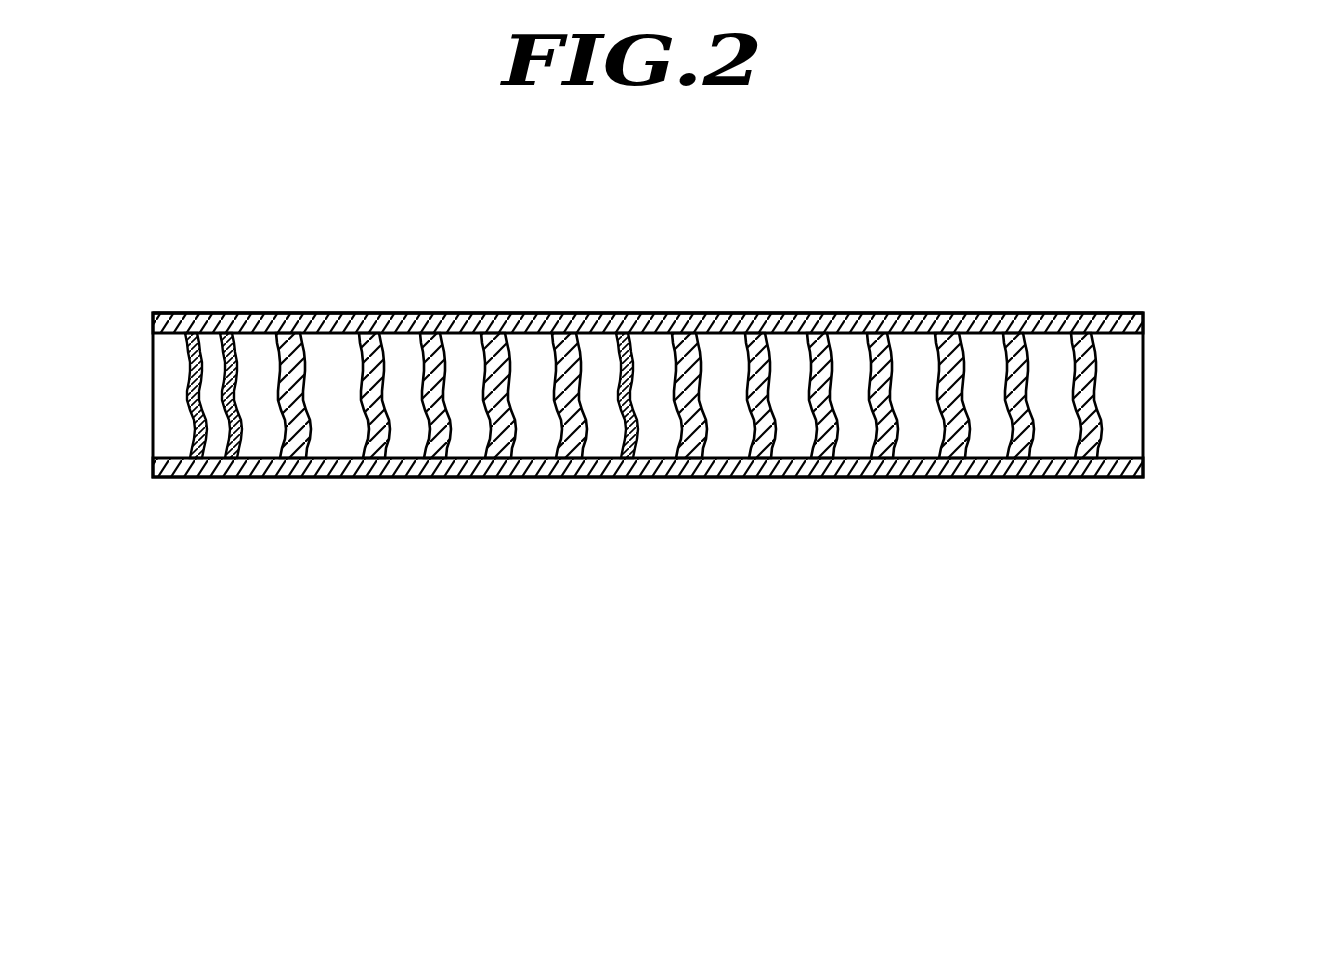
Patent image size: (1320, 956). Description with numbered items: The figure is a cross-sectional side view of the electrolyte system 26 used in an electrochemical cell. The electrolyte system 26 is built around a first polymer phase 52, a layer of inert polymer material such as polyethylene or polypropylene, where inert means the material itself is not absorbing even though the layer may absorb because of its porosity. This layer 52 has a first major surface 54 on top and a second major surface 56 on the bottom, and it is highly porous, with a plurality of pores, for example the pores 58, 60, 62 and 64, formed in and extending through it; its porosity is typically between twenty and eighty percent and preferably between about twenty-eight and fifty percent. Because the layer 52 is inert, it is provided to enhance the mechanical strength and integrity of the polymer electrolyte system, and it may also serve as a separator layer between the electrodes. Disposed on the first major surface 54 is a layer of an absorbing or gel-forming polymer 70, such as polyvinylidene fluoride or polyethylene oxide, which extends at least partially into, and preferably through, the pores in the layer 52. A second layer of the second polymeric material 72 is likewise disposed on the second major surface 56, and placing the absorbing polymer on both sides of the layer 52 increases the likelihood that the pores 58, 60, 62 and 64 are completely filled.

The electrolyte system 26 is at (995, 734).
The first polymer phase 52 is at (1145, 412).
The first major surface 54 is at (1123, 317).
The second major surface 56 is at (1115, 478).
The pore 58 is at (285, 476).
The pore 60 is at (432, 478).
The pore 62 is at (557, 478).
The pore 64 is at (752, 478).
The layer of absorbing or gel-forming polymer 70 is at (183, 318).
The second layer of second polymeric material 72 is at (938, 478).